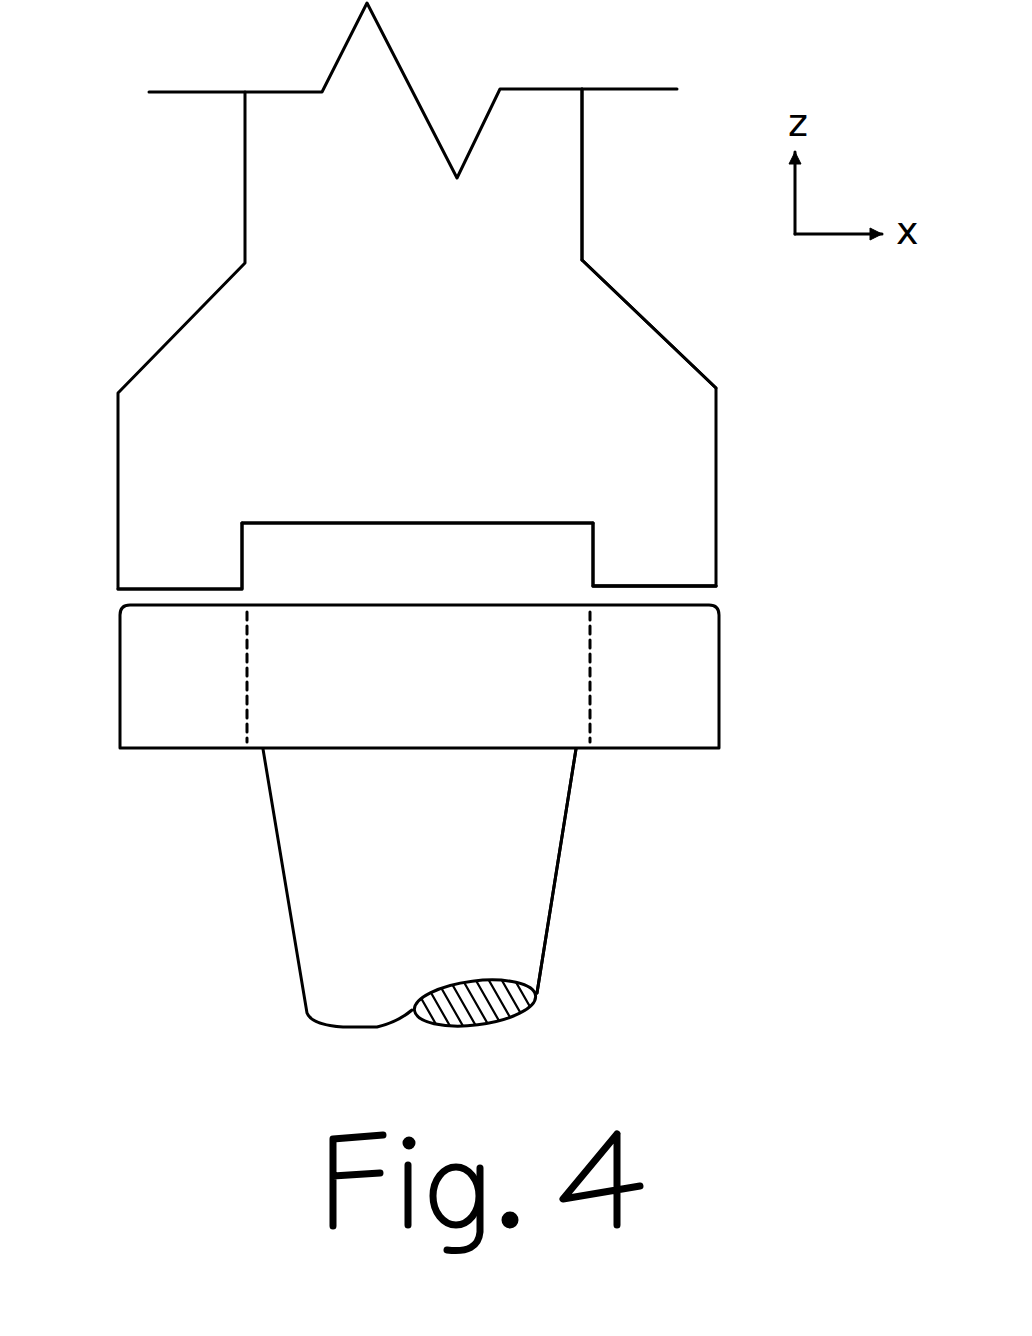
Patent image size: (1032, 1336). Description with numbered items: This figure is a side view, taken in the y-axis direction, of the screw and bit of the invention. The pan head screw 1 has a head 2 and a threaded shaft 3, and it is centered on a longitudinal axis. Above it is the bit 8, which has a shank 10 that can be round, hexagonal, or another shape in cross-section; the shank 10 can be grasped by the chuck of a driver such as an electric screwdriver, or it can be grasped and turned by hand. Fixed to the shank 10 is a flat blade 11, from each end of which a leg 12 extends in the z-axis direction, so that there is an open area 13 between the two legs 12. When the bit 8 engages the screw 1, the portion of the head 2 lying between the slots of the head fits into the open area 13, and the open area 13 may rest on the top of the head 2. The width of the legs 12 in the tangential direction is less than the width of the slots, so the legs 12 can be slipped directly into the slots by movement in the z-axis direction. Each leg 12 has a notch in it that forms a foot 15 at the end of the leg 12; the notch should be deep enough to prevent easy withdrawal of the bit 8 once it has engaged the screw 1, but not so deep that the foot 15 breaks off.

The pan head screw 1 is at (277, 838).
The head 2 is at (719, 675).
The threaded shaft 3 is at (563, 830).
The bit 8 is at (245, 163).
The shank 10 is at (582, 167).
The flat blade 11 is at (676, 347).
The leg 12 is at (173, 565).
The open area 13 is at (440, 580).
The foot 15 is at (677, 586).